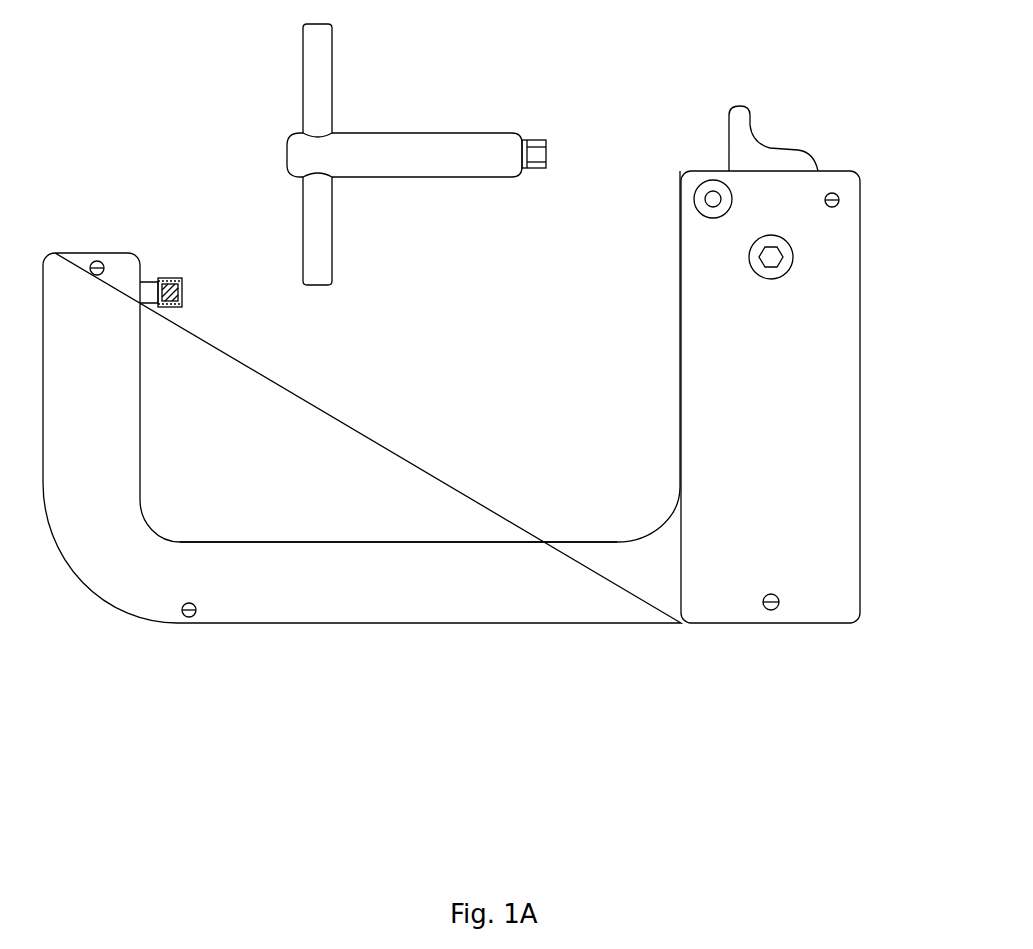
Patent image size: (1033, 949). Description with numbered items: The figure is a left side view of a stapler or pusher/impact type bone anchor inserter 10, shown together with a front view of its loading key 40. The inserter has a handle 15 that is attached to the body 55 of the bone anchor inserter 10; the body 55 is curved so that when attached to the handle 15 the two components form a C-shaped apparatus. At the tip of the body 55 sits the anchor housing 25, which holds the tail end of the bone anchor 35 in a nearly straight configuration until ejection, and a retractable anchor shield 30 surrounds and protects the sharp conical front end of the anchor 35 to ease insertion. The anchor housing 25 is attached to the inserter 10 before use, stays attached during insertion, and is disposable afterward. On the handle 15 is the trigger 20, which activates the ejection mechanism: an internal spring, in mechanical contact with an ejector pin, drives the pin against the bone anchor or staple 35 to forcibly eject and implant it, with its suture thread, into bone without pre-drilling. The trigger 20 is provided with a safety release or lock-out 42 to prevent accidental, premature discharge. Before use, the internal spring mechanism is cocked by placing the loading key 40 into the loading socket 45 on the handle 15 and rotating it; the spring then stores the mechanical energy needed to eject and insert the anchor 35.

The bone anchor inserter 10 is at (402, 625).
The handle 15 is at (810, 429).
The trigger 20 is at (785, 147).
The anchor housing 25 is at (145, 285).
The anchor shield 30 is at (180, 279).
The bone anchor 35 is at (163, 293).
The loading key 40 is at (428, 131).
The safety release or lock-out 42 is at (702, 178).
The loading socket 45 is at (795, 257).
The body 55 is at (443, 557).